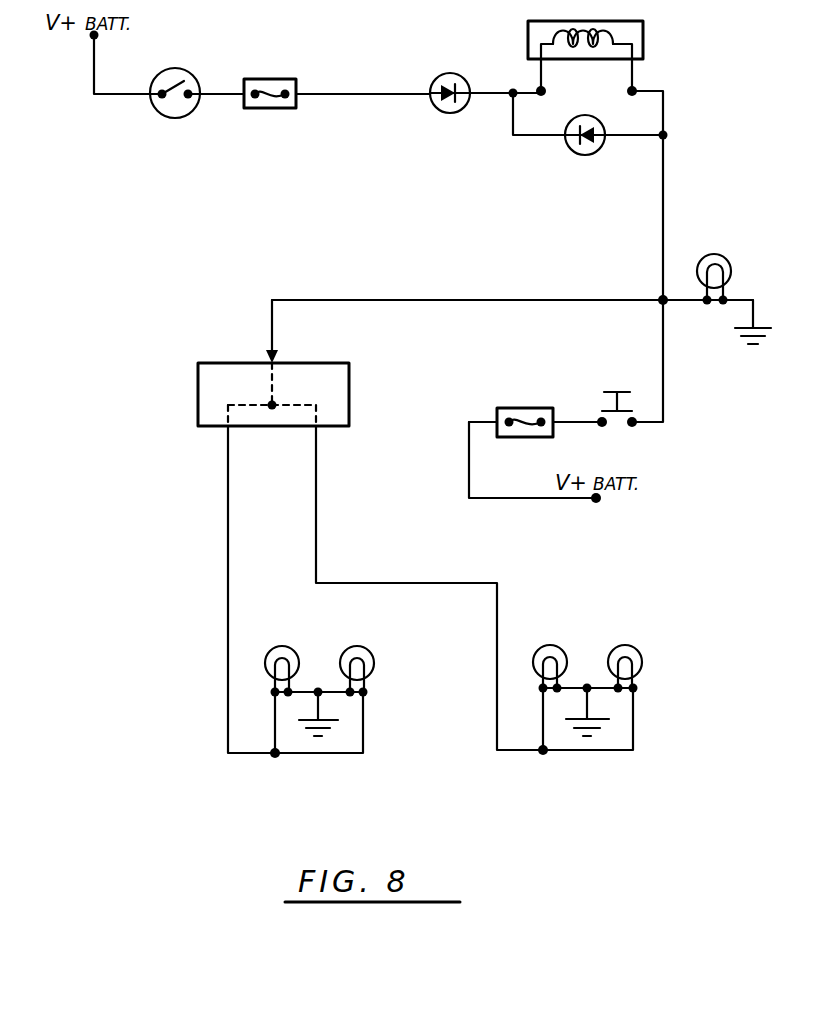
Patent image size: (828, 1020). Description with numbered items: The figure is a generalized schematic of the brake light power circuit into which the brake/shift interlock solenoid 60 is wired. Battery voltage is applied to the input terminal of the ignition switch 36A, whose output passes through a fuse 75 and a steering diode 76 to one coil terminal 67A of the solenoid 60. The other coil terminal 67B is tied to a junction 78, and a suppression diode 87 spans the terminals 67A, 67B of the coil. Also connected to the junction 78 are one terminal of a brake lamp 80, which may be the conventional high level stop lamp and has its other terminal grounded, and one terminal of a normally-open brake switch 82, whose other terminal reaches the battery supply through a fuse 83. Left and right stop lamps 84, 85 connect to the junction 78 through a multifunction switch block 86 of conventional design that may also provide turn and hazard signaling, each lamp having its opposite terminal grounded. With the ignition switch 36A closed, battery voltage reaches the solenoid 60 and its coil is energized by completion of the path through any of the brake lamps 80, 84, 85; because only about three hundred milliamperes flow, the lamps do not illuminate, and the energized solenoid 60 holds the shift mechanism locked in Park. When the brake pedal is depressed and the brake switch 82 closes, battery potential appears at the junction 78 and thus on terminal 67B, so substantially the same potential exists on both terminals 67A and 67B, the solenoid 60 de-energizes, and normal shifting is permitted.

The ignition switch 36A is at (181, 69).
The fuse 75 is at (262, 109).
The steering diode 76 is at (446, 75).
The coil terminal 67A is at (538, 88).
The brake/shift interlock solenoid 60 is at (640, 22).
The coil terminal 67B is at (636, 88).
The suppression diode 87 is at (573, 149).
The junction 78 is at (660, 303).
The brake lamp 80 is at (718, 253).
The multifunction switch block 86 is at (198, 401).
The fuse 83 is at (528, 407).
The brake switch 82 is at (624, 390).
The left stop lamp 84 is at (357, 645).
The right stop lamp 85 is at (625, 644).